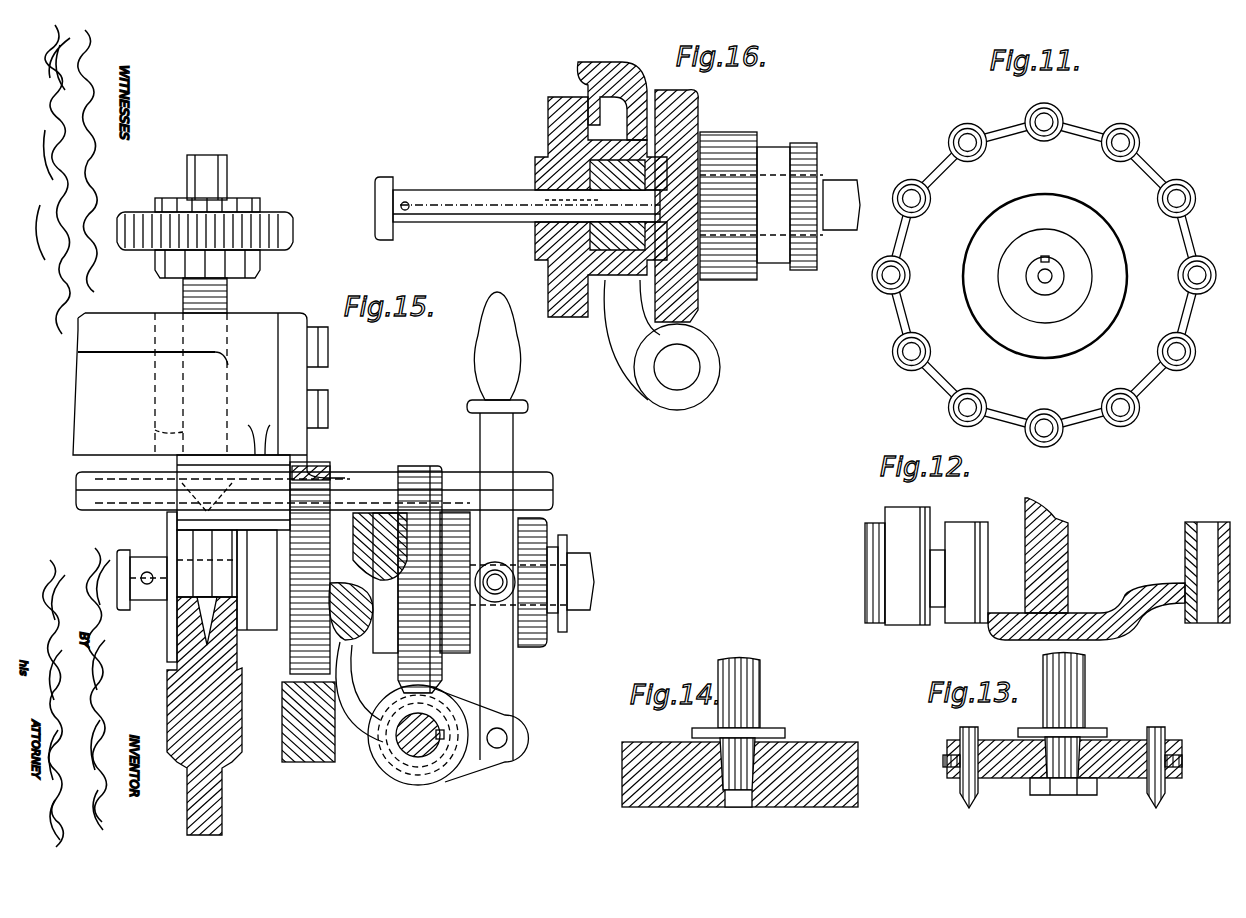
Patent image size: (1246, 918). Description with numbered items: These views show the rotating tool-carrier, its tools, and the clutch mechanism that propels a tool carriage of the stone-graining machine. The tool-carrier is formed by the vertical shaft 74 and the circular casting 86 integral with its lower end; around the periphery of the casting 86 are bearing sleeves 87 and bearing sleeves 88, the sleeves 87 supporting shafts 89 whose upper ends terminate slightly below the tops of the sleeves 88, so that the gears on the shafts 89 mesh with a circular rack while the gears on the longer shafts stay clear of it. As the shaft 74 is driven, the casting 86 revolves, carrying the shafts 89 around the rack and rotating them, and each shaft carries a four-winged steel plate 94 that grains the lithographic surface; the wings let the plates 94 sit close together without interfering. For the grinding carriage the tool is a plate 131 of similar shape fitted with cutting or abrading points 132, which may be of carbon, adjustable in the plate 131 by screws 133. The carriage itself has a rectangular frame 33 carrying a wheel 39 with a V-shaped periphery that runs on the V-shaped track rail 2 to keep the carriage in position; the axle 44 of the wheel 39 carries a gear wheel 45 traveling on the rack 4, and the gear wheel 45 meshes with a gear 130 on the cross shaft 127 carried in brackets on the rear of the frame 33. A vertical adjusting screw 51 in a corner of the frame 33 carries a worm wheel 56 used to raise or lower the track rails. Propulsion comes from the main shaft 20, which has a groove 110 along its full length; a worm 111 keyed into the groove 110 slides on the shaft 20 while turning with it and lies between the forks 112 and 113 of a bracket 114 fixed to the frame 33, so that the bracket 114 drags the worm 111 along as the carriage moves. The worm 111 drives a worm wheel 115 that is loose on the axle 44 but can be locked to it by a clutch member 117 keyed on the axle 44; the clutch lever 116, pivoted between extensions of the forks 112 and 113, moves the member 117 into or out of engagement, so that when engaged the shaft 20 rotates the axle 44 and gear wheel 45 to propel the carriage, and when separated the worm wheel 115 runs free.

In FIG. 15, the V-shaped track rail 2 is at (205, 665).
In FIG. 15, the rack 4 is at (300, 700).
In FIG. 15, the main shaft 20 is at (440, 745).
In FIG. 15, the carriage frame 33 is at (95, 332).
In FIG. 15, the wheel 39 is at (200, 545).
In FIG. 16, the axle 44 is at (490, 186).
In FIG. 15, the axle 44 is at (120, 572).
In FIG. 16, the gear wheel 45 is at (545, 120).
In FIG. 15, the gear wheel 45 is at (300, 655).
In FIG. 15, the adjusting screw 51 is at (225, 303).
In FIG. 15, the worm wheel 56 is at (290, 218).
In FIG. 11, the vertical shaft 74 is at (1055, 277).
In FIG. 12, the vertical shaft 74 is at (1060, 560).
In FIG. 11, the circular casting 86 is at (1120, 198).
In FIG. 12, the circular casting 86 is at (1115, 627).
In FIG. 11, the bearing sleeve 87 is at (899, 275).
In FIG. 12, the bearing sleeve 87 is at (868, 560).
In FIG. 11, the bearing sleeve 88 is at (918, 353).
In FIG. 12, the bearing sleeve 88 is at (893, 585).
In FIG. 14, the shaft 89 is at (760, 682).
In FIG. 13, the shaft 89 is at (624, 459).
In FIG. 14, the steel plate 94 is at (808, 750).
In FIG. 15, the groove 110 is at (442, 735).
In FIG. 15, the worm 111 is at (412, 784).
In FIG. 15, the arm or fork 112 is at (383, 728).
In FIG. 16, the arm or fork 113 is at (722, 358).
In FIG. 16, the bracket 114 is at (626, 100).
In FIG. 15, the bracket 114 is at (350, 462).
In FIG. 16, the worm wheel 115 is at (688, 118).
In FIG. 15, the worm wheel 115 is at (410, 465).
In FIG. 15, the clutch lever 116 is at (503, 458).
In FIG. 16, the clutch member 117 is at (745, 155).
In FIG. 15, the clutch member 117 is at (540, 525).
In FIG. 15, the cross shaft 127 is at (90, 476).
In FIG. 15, the gear 130 is at (290, 474).
In FIG. 13, the plate 131 is at (1018, 782).
In FIG. 13, the cutting or abrading point 132 is at (965, 800).
In FIG. 13, the screw 133 is at (943, 762).